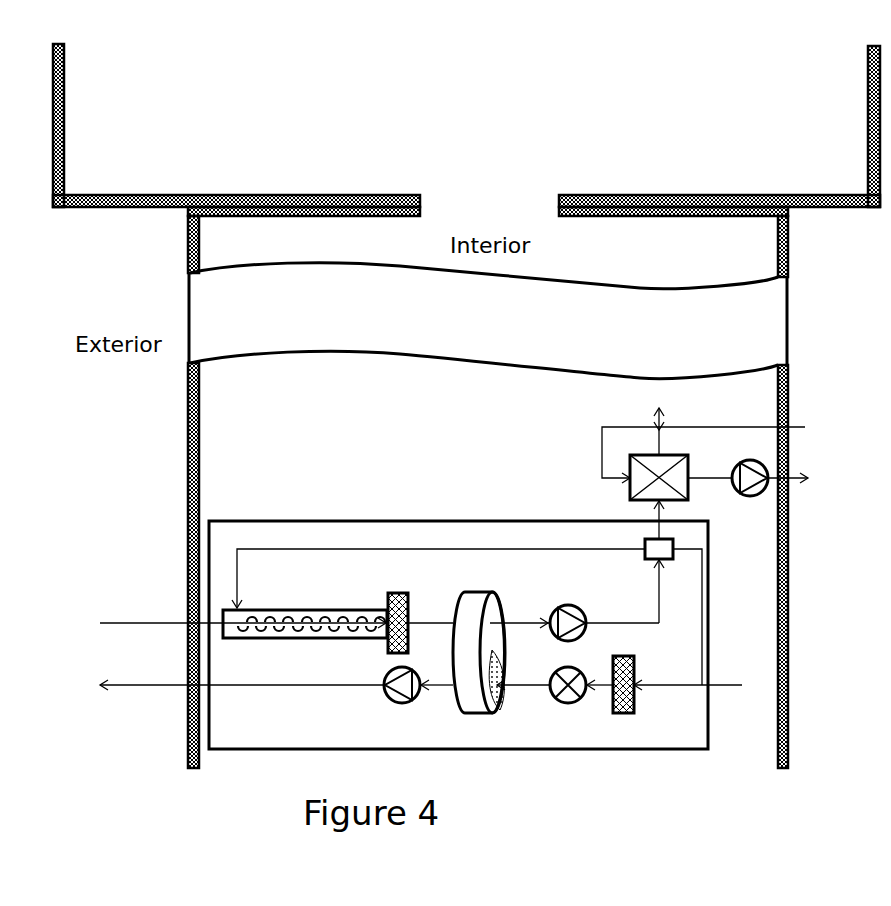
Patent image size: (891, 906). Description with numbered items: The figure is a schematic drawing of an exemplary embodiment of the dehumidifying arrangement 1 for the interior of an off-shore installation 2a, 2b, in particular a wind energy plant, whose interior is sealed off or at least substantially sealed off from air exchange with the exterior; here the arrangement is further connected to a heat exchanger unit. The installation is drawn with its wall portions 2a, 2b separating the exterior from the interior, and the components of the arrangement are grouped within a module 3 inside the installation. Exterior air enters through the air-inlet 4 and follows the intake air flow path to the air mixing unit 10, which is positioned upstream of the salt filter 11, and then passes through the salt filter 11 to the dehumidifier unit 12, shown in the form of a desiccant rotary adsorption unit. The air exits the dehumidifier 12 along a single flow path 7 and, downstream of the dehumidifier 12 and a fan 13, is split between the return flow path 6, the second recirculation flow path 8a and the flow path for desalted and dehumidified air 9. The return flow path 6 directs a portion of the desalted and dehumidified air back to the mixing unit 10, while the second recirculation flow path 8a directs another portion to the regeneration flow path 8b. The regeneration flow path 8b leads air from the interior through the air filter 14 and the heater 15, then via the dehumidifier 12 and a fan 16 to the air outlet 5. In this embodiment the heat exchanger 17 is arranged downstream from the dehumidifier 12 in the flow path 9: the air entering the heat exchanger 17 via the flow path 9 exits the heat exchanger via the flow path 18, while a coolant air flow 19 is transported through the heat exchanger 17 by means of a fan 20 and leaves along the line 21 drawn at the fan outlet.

The dehumidifying arrangement 1 is at (180, 487).
The off-shore installation 2a is at (488, 487).
The off-shore installation 2b is at (466, 125).
The treatment module 3 is at (458, 614).
The air-inlet 4 is at (243, 614).
The air outlet 5 is at (242, 673).
The return flow path 6 is at (438, 578).
The single flow path 7 is at (666, 591).
The second recirculation flow path 8a is at (685, 617).
The regeneration flow path 8b is at (688, 677).
The flow path for desalted and dehumidified air 9 is at (667, 529).
The air mixing unit 10 is at (305, 611).
The salt filter 11 is at (420, 610).
The dehumidifier unit 12 is at (479, 638).
The fan 13 is at (574, 608).
The air filter 14 is at (613, 698).
The heater 15 is at (541, 704).
The fan 16 is at (418, 704).
The heat exchanger 17 is at (681, 476).
The flow path 18 is at (669, 422).
The coolant air flow 19 is at (715, 444).
The fan 20 is at (751, 492).
The discharge line 21 is at (798, 469).